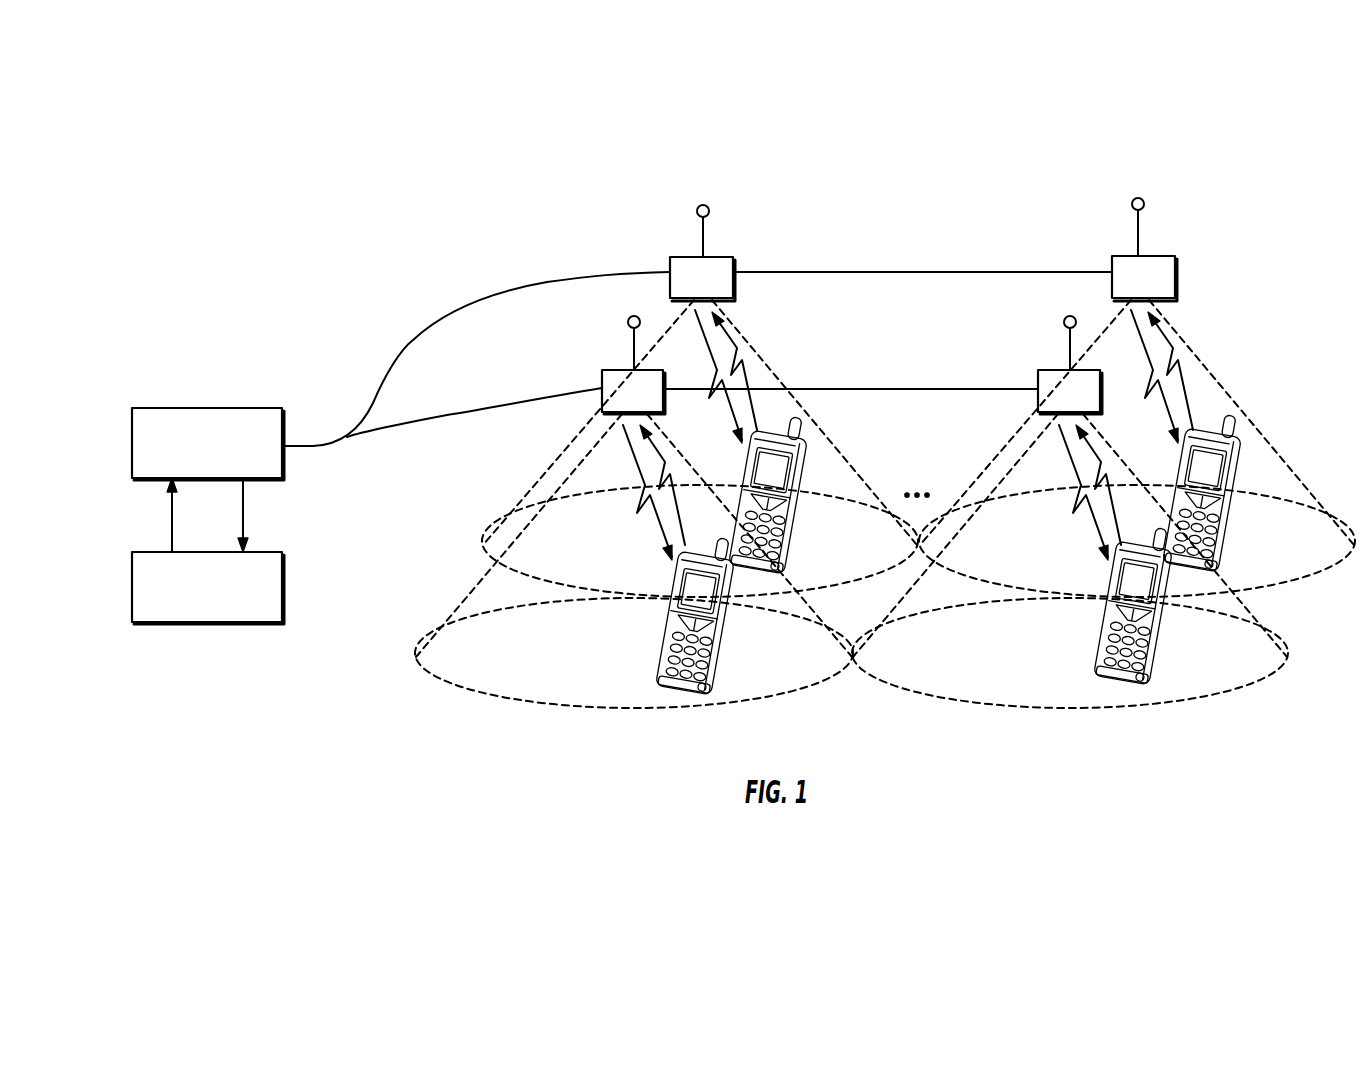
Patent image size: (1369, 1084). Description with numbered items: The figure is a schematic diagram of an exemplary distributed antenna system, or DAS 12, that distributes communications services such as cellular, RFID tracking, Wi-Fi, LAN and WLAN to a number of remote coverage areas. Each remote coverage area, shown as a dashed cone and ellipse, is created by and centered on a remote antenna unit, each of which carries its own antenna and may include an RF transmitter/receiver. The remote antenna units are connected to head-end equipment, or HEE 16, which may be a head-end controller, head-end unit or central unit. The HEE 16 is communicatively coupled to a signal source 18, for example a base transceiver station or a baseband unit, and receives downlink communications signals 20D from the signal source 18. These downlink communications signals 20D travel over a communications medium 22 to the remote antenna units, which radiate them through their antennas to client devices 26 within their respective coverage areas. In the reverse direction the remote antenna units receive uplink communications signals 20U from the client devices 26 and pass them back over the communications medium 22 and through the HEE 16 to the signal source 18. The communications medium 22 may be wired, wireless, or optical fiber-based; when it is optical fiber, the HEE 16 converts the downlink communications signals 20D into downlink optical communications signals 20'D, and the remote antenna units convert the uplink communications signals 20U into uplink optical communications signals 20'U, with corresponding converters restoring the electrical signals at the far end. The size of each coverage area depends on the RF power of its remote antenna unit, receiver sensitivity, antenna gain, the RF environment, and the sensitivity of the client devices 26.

The distributed antenna system (DAS) 12 is at (908, 213).
The head-end equipment (HEE) 16 is at (222, 457).
The signal source 18 is at (222, 601).
The downlink communications signals 20D is at (171, 527).
The uplink communications signals 20U is at (244, 527).
The downlink optical communications signals 20'D is at (365, 248).
The uplink optical communications signals 20'U is at (410, 496).
The communications medium 22 is at (499, 290).
The client device 26 is at (805, 468).